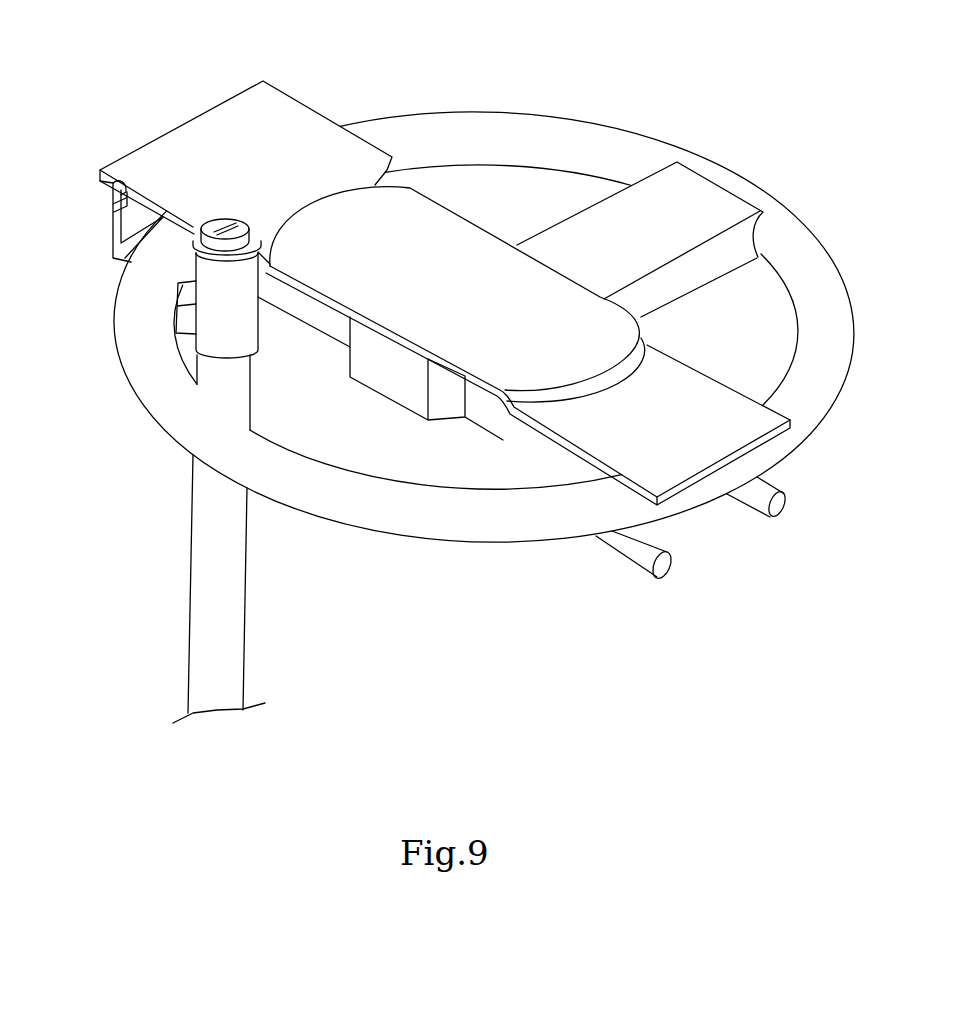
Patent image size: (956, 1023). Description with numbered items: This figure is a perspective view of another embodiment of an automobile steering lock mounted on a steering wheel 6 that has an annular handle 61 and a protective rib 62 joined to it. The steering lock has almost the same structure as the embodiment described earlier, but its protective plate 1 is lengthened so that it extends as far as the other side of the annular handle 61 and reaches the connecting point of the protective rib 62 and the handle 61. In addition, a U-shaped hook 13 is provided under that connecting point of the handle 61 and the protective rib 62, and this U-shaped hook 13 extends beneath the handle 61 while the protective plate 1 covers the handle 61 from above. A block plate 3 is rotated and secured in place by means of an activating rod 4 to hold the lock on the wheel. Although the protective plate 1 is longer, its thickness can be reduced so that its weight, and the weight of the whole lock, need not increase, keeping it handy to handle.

The protective plate 1 is at (333, 125).
The block plate 3 is at (109, 228).
The activating rod 4 is at (193, 496).
The steering wheel 6 is at (502, 320).
The annular handle 61 is at (810, 237).
The protective rib 62 is at (503, 443).
The U-shaped hook 13 is at (628, 548).